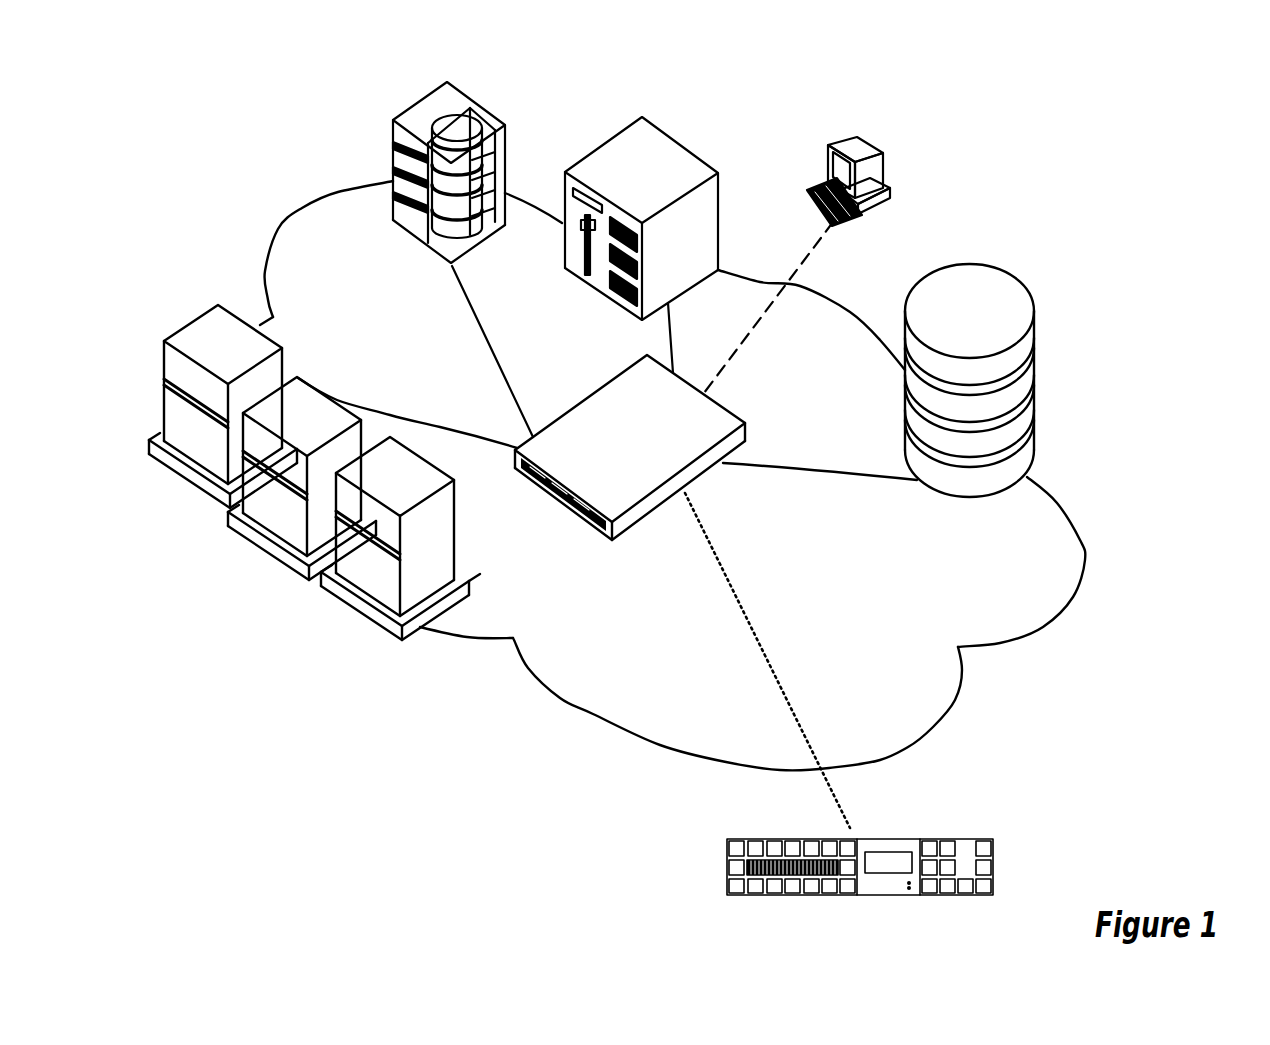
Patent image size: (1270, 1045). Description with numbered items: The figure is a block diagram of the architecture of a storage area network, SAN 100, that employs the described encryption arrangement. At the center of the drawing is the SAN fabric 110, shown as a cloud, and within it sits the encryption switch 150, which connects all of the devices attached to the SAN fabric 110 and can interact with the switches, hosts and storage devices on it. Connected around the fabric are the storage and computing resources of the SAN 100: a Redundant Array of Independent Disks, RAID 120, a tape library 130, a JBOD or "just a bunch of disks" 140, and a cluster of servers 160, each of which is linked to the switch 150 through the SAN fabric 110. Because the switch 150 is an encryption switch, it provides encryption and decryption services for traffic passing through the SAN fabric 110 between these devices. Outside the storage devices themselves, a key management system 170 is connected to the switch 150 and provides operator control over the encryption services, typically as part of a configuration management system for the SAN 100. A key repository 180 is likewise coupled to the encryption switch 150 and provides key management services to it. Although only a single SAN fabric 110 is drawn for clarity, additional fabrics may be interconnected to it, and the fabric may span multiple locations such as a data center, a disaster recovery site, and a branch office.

The SAN 100 is at (985, 128).
The SAN fabric 110 is at (638, 747).
The Redundant Array of Independent Disks (RAID) 120 is at (447, 83).
The tape library 130 is at (673, 142).
The JBOD 140 is at (993, 267).
The encryption switch 150 is at (635, 525).
The cluster of servers 160 is at (147, 477).
The key management system 170 is at (858, 137).
The key repository 180 is at (902, 840).